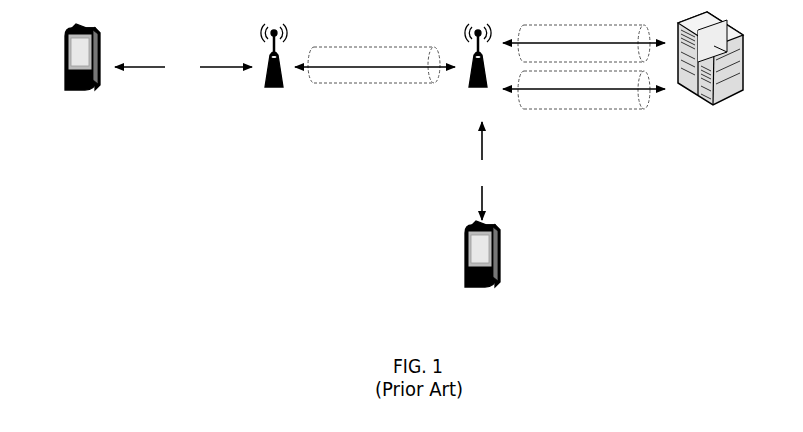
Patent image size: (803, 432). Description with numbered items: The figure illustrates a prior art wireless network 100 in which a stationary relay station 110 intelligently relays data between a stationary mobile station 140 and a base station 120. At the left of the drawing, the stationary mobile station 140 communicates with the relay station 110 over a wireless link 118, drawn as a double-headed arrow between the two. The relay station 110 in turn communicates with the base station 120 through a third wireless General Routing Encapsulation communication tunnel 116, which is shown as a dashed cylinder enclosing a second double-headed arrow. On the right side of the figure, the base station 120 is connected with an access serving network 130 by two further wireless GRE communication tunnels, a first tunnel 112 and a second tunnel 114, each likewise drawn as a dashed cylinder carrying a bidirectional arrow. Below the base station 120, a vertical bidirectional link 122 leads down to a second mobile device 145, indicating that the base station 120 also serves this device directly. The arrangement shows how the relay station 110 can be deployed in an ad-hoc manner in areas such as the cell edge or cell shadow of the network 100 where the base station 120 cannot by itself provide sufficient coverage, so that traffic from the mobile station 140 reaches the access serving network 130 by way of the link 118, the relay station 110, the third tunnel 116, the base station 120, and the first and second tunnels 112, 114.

The prior art wireless network 100 is at (52, 379).
The stationary relay station 110 is at (274, 70).
The wireless GRE communication tunnel 1 112 is at (584, 43).
The wireless GRE communication tunnel 2 114 is at (584, 90).
The wireless GRE communication tunnel 3 116 is at (375, 65).
The wireless link 118 is at (183, 67).
The base station 120 is at (479, 70).
The wireless link 122 is at (482, 171).
The access serving network 130 is at (710, 73).
The stationary mobile station 140 is at (82, 70).
The second mobile device 145 is at (482, 269).